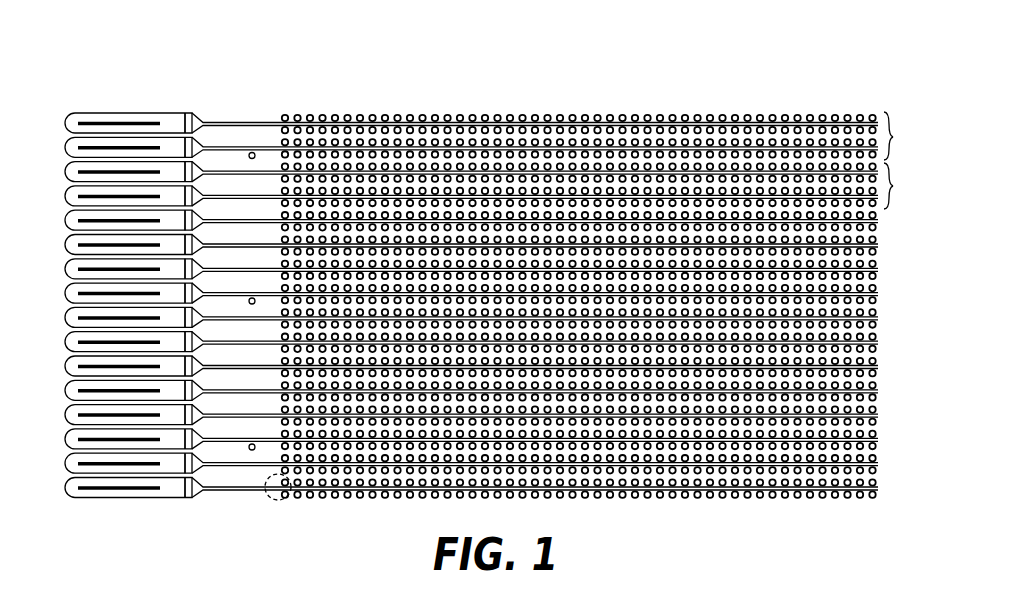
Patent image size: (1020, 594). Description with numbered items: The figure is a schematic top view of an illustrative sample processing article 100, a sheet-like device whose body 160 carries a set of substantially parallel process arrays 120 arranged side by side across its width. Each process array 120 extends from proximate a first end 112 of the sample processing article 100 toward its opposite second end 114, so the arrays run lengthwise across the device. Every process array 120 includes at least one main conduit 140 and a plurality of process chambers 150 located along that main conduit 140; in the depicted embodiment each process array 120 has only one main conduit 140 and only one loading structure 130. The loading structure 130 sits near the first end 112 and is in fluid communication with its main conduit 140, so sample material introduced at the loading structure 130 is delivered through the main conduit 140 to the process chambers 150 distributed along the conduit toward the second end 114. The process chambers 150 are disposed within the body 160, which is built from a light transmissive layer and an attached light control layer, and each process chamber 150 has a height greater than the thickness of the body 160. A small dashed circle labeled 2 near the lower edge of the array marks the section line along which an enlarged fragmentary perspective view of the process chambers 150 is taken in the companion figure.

The sample processing article 100 is at (615, 76).
The first end 112 is at (68, 122).
The loading structure 130 is at (178, 123).
The main conduit 140 is at (237, 121).
The process chambers 150 is at (409, 117).
The process arrays 120 is at (893, 186).
The second end 114 is at (878, 294).
The body 160 is at (238, 491).
The section line 2- 2 is at (271, 500).